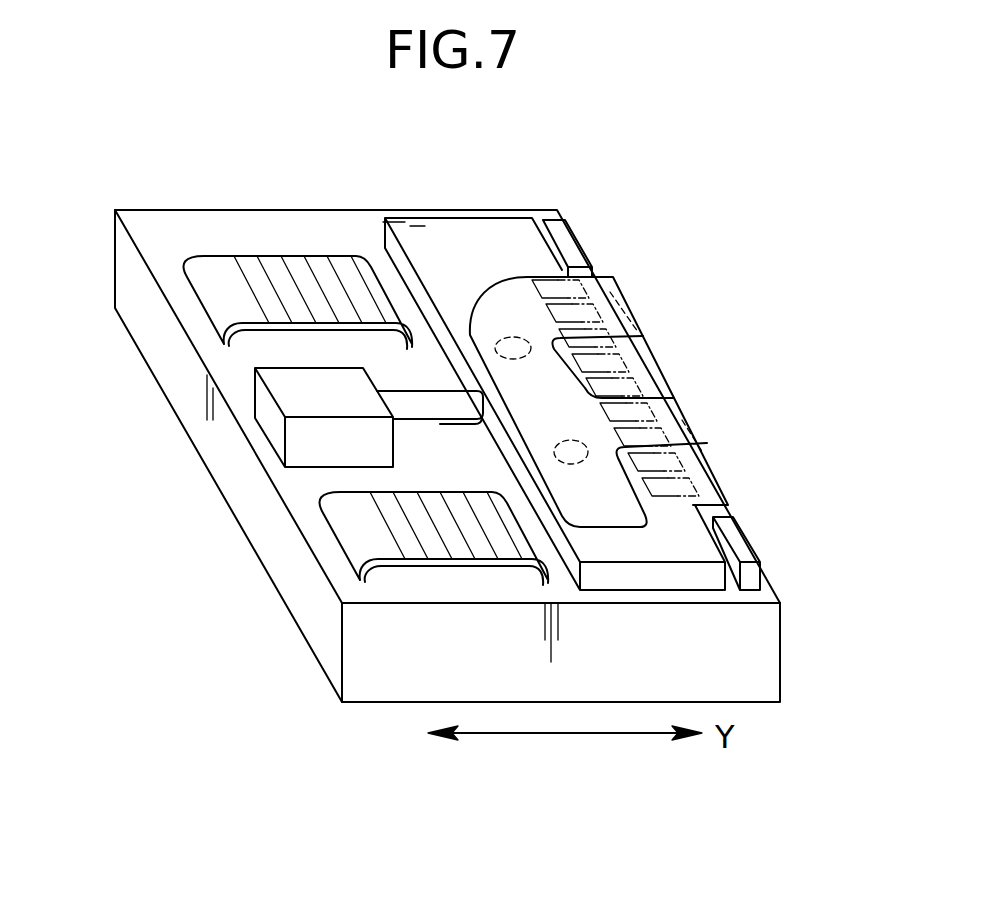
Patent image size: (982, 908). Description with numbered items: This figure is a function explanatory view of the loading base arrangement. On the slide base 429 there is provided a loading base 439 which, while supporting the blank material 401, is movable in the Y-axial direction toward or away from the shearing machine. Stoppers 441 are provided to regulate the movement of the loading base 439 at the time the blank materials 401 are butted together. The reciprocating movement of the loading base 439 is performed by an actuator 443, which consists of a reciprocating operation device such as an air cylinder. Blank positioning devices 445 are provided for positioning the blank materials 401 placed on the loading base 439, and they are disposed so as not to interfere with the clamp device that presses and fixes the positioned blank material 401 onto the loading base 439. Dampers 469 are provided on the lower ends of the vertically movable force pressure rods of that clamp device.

The blank material 401 is at (487, 313).
The slide base 429 is at (783, 658).
The loading base 439 is at (428, 233).
The stoppers 441 is at (580, 245).
The actuator 443 is at (334, 378).
The blank positioning devices 445 is at (476, 343).
The dampers 469 is at (624, 360).